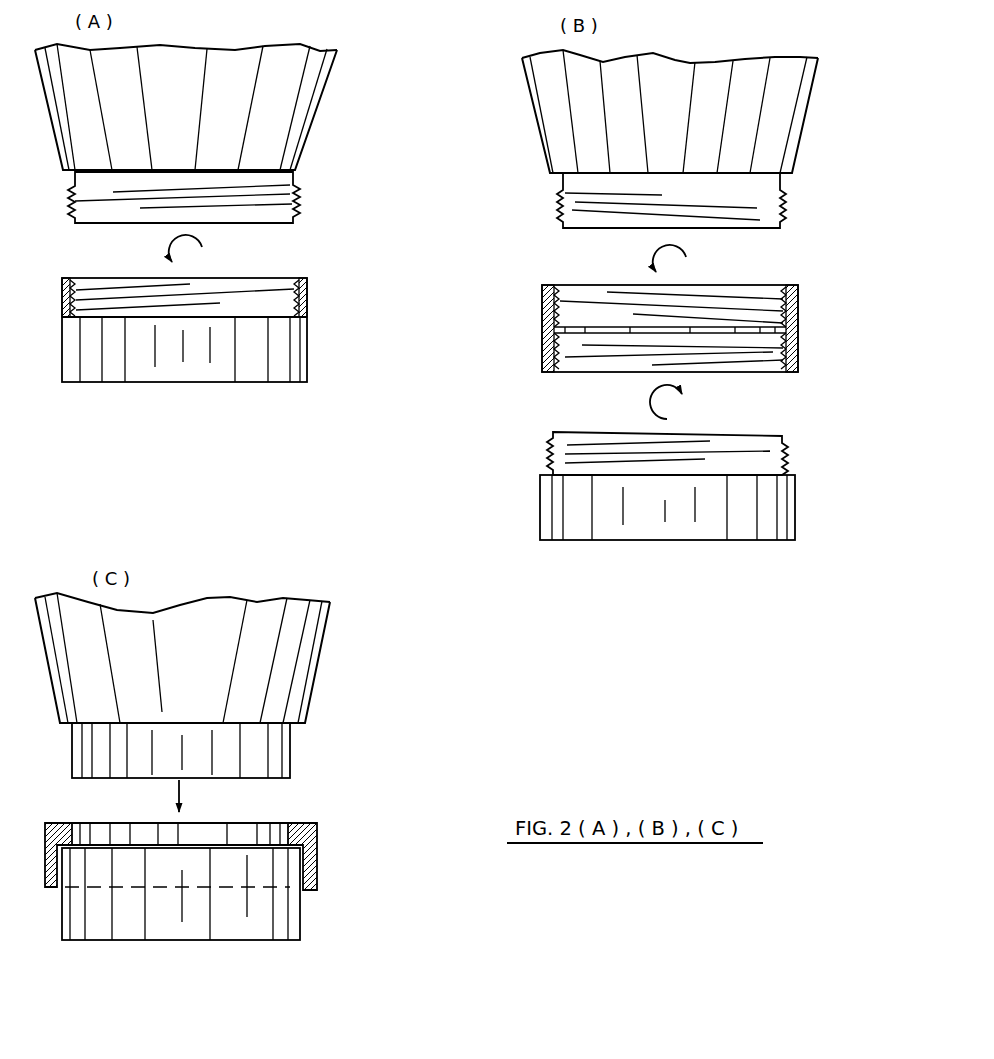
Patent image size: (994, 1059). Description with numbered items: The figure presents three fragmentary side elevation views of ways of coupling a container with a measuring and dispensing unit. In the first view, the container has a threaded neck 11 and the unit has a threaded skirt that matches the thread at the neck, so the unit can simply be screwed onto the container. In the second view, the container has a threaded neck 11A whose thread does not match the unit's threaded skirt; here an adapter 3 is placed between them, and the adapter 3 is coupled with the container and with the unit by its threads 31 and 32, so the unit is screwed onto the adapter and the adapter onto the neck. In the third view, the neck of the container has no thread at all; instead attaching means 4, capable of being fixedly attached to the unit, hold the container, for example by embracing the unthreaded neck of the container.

The threaded neck 11 is at (275, 193).
The threaded neck 11A is at (753, 210).
The adapter 3 is at (787, 330).
The thread 31 is at (748, 297).
The thread 32 is at (770, 353).
The attaching means 4 is at (315, 838).